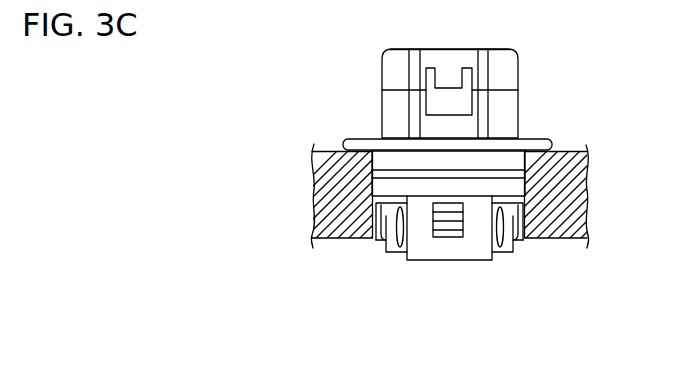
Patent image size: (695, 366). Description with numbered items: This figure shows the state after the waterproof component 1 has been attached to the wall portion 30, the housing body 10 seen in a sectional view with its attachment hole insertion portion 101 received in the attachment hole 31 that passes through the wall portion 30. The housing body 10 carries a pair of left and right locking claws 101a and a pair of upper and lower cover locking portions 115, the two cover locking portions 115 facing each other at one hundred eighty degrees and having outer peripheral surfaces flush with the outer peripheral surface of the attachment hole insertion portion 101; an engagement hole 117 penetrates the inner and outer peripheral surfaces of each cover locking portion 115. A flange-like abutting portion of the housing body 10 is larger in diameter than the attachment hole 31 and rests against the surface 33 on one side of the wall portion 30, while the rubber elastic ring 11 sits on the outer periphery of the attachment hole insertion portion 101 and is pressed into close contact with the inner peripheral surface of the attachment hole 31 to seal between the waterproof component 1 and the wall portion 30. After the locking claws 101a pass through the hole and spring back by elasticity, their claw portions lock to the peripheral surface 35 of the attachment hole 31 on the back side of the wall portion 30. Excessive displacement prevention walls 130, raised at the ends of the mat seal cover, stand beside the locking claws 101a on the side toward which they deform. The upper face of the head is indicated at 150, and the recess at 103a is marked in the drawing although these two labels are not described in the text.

The waterproof component 1 is at (529, 61).
The housing body 10 is at (506, 112).
The top face of head 150 is at (396, 55).
The engagement hole 103a is at (444, 222).
The attachment hole insertion portion 101 is at (508, 162).
The locking claw 101a is at (372, 250).
The elastic ring (O ring) 11 is at (510, 189).
The cover locking portion 115 is at (422, 244).
The engagement hole 117 is at (450, 233).
The excessive displacement prevention wall 130 is at (398, 252).
The wall portion 30 is at (322, 186).
The attachment hole 31 is at (514, 214).
The surface on one side of the wall portion 33 is at (334, 151).
The peripheral surface of the attachment hole 35 is at (319, 240).